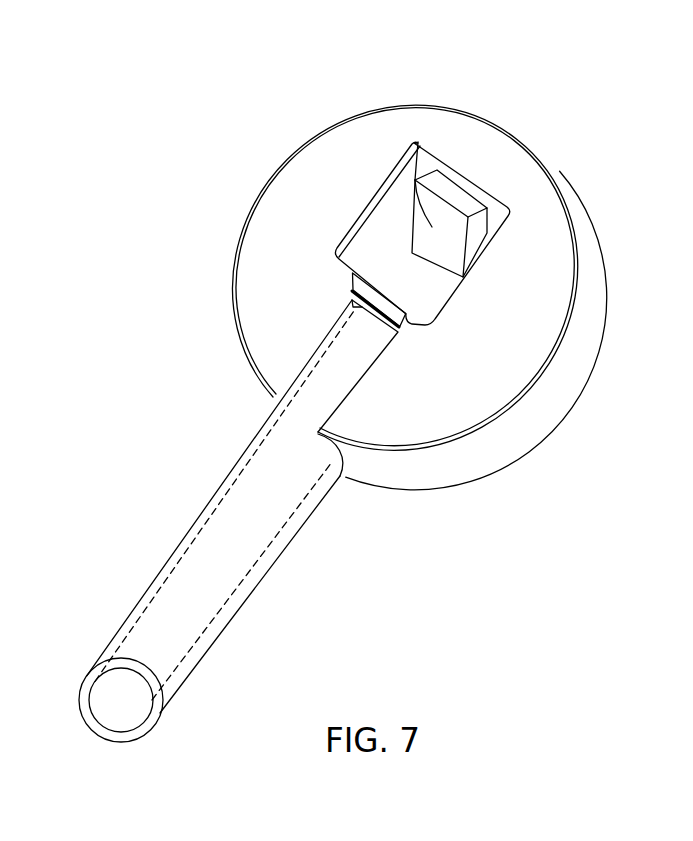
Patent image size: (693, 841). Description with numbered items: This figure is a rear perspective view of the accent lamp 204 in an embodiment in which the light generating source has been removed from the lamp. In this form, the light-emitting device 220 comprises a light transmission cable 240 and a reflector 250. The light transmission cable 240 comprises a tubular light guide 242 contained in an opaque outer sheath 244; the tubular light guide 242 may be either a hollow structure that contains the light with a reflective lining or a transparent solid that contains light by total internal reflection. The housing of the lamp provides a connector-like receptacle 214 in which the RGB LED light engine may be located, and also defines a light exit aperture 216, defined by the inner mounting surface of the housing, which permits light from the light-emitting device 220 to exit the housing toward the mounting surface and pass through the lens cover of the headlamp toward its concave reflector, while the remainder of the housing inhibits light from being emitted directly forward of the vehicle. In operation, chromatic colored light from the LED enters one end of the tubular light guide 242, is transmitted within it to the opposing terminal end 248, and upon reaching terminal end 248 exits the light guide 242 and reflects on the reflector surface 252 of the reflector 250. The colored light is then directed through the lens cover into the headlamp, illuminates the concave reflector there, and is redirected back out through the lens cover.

The accent lamp 204 is at (552, 103).
The light-emitting device 220 is at (583, 217).
The connector-like receptacle 214 is at (377, 243).
The light exit aperture 216 is at (352, 228).
The terminal end 248 is at (352, 298).
The reflector 250 is at (452, 248).
The reflector surface 252 is at (415, 180).
The light transmission cable 240 is at (253, 582).
The tubular light guide 242 is at (220, 511).
The opaque outer sheath 244 is at (155, 722).